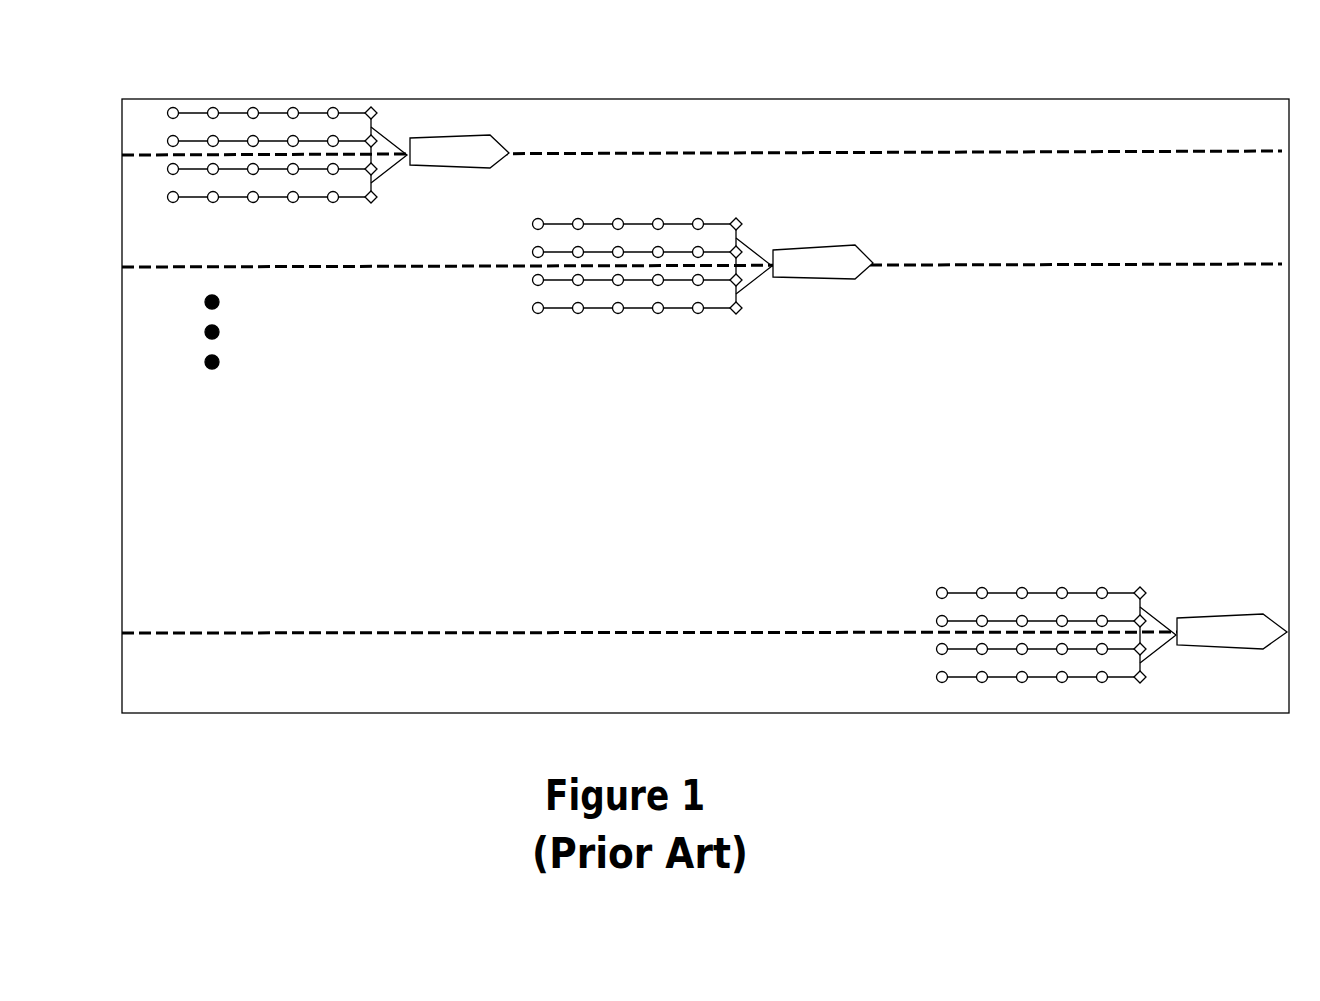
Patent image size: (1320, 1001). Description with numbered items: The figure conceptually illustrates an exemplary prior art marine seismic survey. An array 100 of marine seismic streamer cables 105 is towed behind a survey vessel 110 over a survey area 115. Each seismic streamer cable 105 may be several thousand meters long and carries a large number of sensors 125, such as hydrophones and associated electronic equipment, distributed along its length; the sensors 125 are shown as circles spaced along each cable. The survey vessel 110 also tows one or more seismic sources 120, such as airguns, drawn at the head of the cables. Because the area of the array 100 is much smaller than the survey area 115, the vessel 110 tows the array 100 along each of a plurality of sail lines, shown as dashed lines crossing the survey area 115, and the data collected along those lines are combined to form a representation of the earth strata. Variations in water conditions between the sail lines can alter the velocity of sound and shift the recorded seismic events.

The array 100 is at (624, 366).
The marine seismic streamer cable 105 is at (267, 203).
The survey vessel 110 is at (477, 135).
The survey area 115 is at (873, 714).
The seismic source 120 is at (371, 107).
The sensor 125 is at (333, 107).